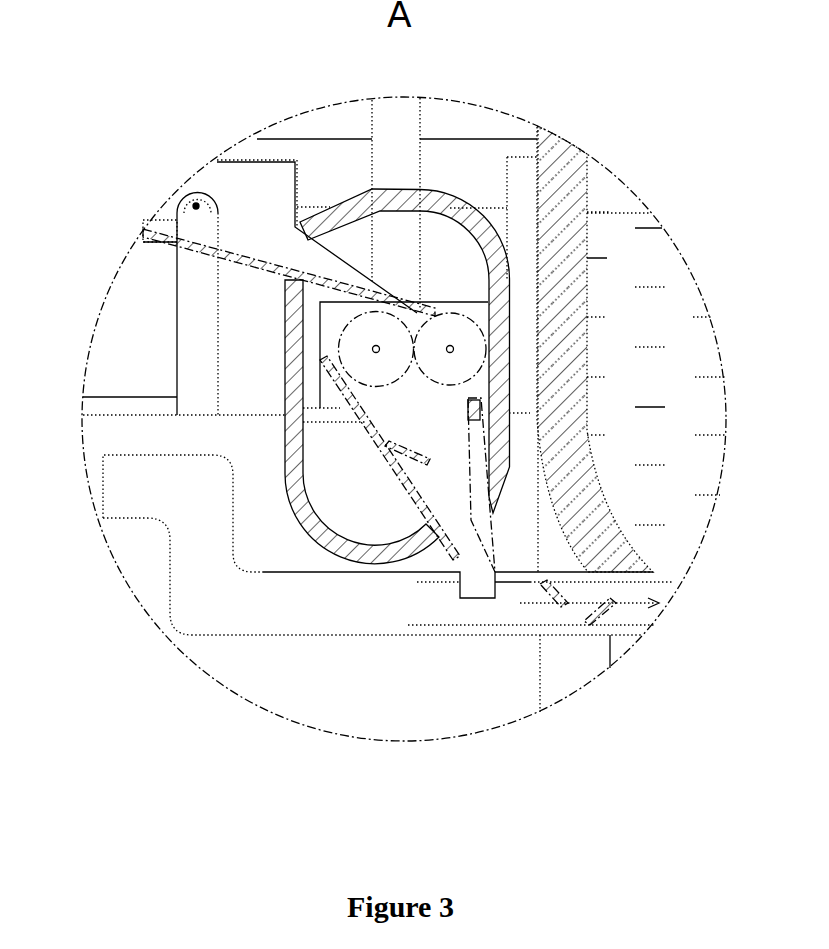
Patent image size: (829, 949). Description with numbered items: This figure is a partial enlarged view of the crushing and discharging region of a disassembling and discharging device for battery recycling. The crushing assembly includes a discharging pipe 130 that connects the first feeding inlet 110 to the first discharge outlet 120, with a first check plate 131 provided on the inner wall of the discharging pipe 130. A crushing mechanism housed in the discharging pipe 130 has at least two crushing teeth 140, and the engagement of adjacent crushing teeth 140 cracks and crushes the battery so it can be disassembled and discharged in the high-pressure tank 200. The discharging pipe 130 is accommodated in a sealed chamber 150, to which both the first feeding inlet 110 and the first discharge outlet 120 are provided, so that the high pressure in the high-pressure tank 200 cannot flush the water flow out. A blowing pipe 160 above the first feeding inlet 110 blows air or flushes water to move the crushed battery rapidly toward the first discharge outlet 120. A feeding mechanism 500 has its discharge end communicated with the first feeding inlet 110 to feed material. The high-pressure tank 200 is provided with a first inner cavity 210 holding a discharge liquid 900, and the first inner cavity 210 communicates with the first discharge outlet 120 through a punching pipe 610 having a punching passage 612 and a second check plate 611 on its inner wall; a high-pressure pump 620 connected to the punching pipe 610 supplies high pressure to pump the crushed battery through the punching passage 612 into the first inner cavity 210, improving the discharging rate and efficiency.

The first feeding inlet 110 is at (412, 337).
The first discharge outlet 120 is at (476, 530).
The discharging pipe 130 is at (410, 556).
The first check plate 131 is at (388, 455).
The crushing teeth 140 is at (363, 342).
The sealed chamber 150 is at (350, 193).
The blowing pipe 160 is at (400, 115).
The high-pressure tank 200 is at (567, 175).
The first inner cavity 210 is at (617, 198).
The feeding mechanism 500 is at (190, 193).
The punching pipe 610 is at (203, 588).
The second check plate 611 is at (610, 613).
The punching passage 612 is at (553, 613).
The high-pressure pump 620 is at (95, 468).
The discharge liquid 900 is at (672, 462).